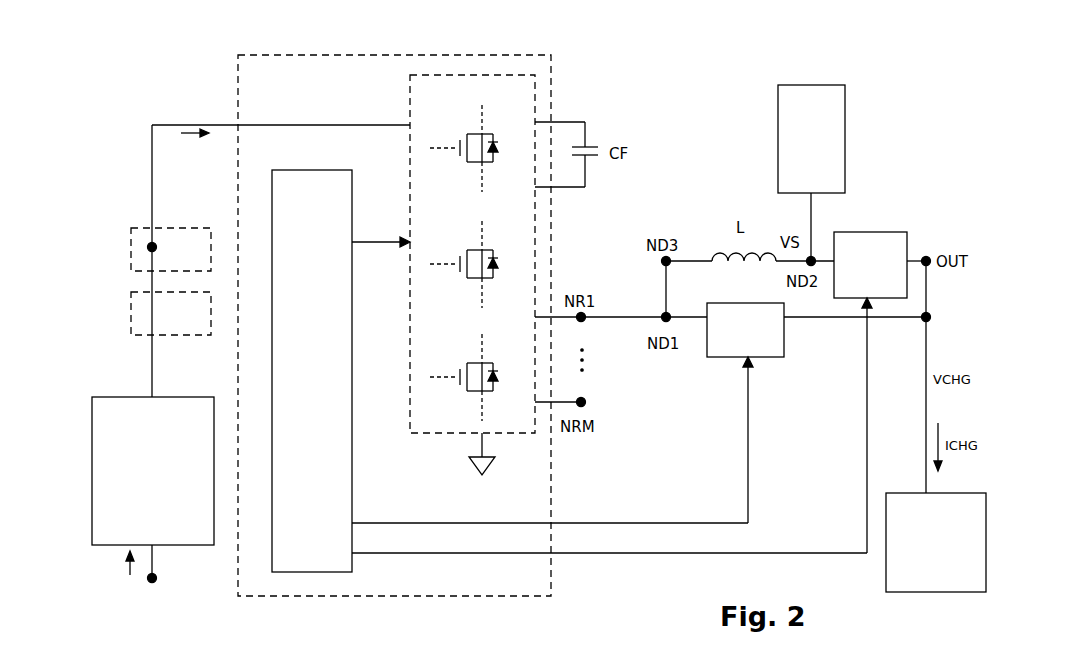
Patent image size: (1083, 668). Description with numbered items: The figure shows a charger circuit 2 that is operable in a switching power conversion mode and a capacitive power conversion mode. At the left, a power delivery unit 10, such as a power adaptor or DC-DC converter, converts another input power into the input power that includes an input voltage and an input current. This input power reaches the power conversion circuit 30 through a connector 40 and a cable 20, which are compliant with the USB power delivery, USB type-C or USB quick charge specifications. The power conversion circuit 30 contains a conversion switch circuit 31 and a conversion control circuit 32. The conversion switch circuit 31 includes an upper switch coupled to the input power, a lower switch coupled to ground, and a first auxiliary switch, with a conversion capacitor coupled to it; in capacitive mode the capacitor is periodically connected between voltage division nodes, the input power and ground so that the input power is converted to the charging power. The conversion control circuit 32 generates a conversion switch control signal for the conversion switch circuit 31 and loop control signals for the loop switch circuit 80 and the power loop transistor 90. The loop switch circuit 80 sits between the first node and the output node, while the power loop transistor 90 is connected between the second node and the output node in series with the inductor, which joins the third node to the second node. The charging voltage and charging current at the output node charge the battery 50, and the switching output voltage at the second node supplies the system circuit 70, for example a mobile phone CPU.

The charger circuit 2 is at (197, 58).
The power delivery unit 10 is at (153, 471).
The cable 20 is at (171, 313).
The connector 40 is at (171, 249).
The power conversion circuit 30 is at (555, 325).
The conversion switch circuit 31 is at (472, 275).
The conversion control circuit 32 is at (572, 375).
The battery 50 is at (936, 542).
The system circuit 70 is at (811, 139).
The loop switch circuit 80 is at (745, 330).
The power loop transistor 90 is at (870, 265).